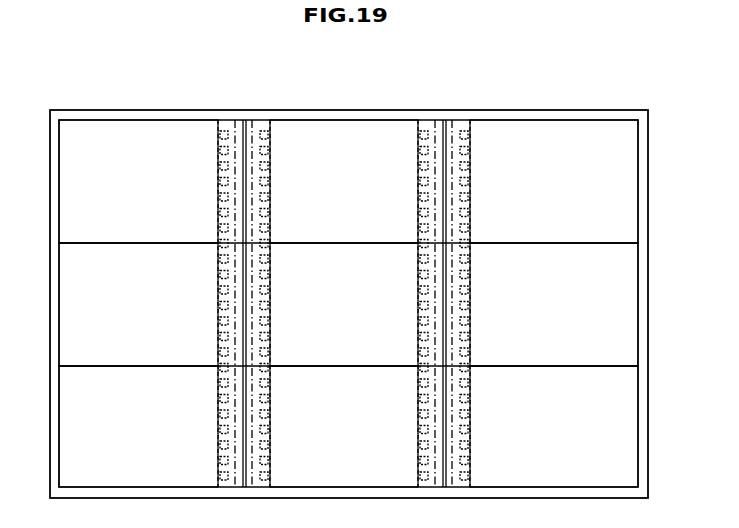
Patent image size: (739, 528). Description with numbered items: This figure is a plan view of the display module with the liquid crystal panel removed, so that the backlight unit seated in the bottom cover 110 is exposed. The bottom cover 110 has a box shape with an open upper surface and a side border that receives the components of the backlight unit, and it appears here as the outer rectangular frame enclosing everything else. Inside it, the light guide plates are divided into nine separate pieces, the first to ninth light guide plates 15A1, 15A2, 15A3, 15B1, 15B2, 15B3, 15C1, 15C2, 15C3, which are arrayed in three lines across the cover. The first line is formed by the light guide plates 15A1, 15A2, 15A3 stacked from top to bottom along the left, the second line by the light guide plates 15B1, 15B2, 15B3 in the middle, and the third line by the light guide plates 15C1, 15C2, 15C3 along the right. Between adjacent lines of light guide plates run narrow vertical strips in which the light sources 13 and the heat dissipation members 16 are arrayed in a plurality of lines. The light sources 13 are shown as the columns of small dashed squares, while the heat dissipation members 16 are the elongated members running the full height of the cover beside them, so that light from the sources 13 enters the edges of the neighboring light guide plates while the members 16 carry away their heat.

The bottom cover 110 is at (85, 111).
The light sources 13 is at (221, 136).
The heat dissipation members 16 is at (231, 124).
The first light guide plate 15A1 is at (138, 181).
The second light guide plate 15A2 is at (138, 304).
The third light guide plate 15A3 is at (138, 426).
The fourth light guide plate 15B1 is at (344, 181).
The fifth light guide plate 15B2 is at (344, 304).
The sixth light guide plate 15B3 is at (344, 426).
The seventh light guide plate 15C1 is at (554, 181).
The eighth light guide plate 15C2 is at (554, 304).
The ninth light guide plate 15C3 is at (554, 426).